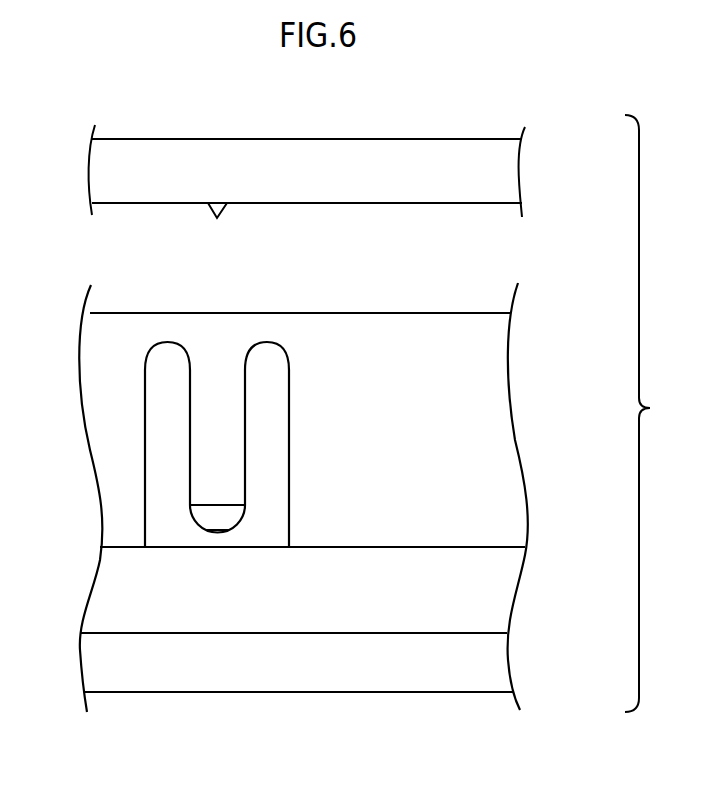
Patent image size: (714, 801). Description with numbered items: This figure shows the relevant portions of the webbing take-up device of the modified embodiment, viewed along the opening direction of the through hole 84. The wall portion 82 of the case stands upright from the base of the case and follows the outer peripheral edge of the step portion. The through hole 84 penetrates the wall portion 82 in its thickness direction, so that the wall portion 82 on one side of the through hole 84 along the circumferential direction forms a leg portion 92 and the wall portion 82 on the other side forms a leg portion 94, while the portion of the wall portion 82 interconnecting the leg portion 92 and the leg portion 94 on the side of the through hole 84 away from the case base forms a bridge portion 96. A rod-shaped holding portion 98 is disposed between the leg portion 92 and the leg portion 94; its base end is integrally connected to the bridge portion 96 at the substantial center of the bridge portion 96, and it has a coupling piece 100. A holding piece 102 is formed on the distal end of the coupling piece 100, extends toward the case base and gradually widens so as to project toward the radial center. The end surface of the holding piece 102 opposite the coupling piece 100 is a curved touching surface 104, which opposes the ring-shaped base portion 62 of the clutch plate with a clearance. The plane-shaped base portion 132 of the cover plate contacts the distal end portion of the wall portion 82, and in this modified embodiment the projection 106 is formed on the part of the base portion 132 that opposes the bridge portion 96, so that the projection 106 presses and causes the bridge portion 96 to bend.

The base portion 132 is at (364, 152).
The projection 106 is at (209, 213).
The wall portion 82 is at (468, 333).
The bridge portion 96 is at (272, 316).
The leg portion 92 is at (130, 450).
The leg portion 94 is at (274, 430).
The holding portion 98 is at (238, 409).
The coupling piece 100 is at (200, 458).
The holding piece 102 is at (240, 507).
The through hole 84 is at (292, 505).
The touching surface 104 is at (217, 535).
The base portion 62 is at (434, 547).